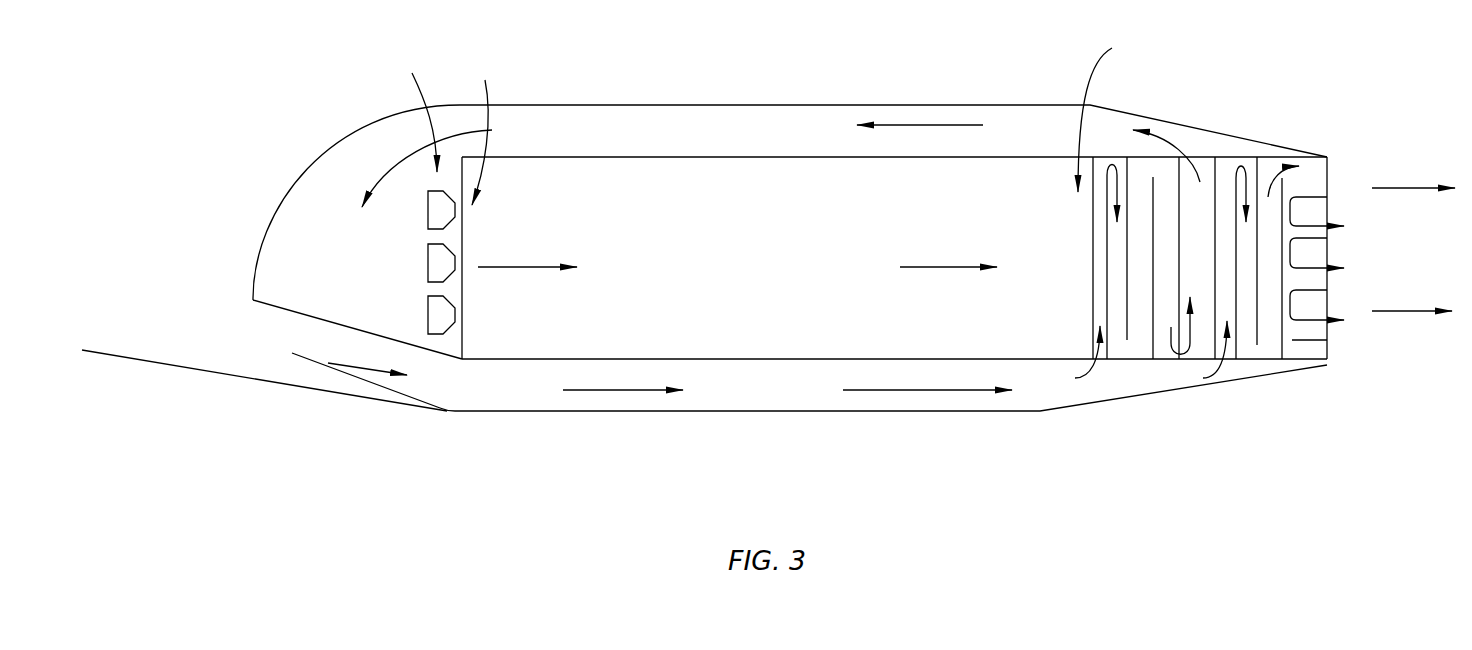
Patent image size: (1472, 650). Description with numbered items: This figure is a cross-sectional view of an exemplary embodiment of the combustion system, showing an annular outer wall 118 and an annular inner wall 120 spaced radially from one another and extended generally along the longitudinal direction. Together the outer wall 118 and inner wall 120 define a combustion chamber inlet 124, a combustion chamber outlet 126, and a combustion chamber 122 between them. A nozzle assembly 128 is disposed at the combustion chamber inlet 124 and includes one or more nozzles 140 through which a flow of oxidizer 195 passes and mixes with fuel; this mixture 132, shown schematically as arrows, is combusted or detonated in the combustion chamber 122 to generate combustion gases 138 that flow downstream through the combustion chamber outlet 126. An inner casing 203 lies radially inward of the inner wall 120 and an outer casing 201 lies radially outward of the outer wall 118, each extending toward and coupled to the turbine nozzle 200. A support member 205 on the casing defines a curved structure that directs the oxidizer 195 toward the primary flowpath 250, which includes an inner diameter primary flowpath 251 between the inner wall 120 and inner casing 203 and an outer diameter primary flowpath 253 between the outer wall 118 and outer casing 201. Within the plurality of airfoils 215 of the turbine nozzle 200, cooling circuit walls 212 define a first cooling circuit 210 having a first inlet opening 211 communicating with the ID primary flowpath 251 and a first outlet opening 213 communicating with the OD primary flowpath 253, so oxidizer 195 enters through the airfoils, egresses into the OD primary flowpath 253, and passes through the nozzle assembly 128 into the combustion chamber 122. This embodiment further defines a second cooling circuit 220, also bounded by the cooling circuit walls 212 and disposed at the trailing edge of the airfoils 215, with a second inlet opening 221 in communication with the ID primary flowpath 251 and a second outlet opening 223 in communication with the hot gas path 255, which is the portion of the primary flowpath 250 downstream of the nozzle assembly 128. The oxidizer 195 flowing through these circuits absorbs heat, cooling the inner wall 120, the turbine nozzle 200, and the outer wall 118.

The annular outer wall 118 is at (953, 158).
The annular inner wall 120 is at (948, 358).
The combustion chamber 122 is at (667, 275).
The combustion chamber inlet 124 is at (467, 134).
The combustion chamber outlet 126 is at (1112, 113).
The nozzle assembly 128 is at (417, 105).
The fuel/oxidizer mixture 132 is at (497, 263).
The combustion gases 138 is at (928, 265).
The nozzle 140 is at (437, 318).
The oxidizer 195 is at (393, 157).
The turbine nozzle 200 is at (1327, 162).
The outer casing 201 is at (515, 105).
The inner casing 203 is at (538, 413).
The support member 205 is at (297, 183).
The first cooling circuit 210 is at (1202, 350).
The first inlet opening 211 is at (1105, 363).
The cooling circuit walls 212 is at (1212, 360).
The first outlet opening 213 is at (1197, 152).
The plurality of airfoils 215 is at (1335, 349).
The second cooling circuit 220 is at (1267, 347).
The second inlet opening 221 is at (1230, 365).
The second outlet opening 223 is at (1331, 312).
The primary flowpath 250 is at (176, 287).
The inner diameter (ID) primary flowpath 251 is at (771, 397).
The outer diameter (OD) primary flowpath 253 is at (1051, 147).
The hot gas path 255 is at (1061, 277).